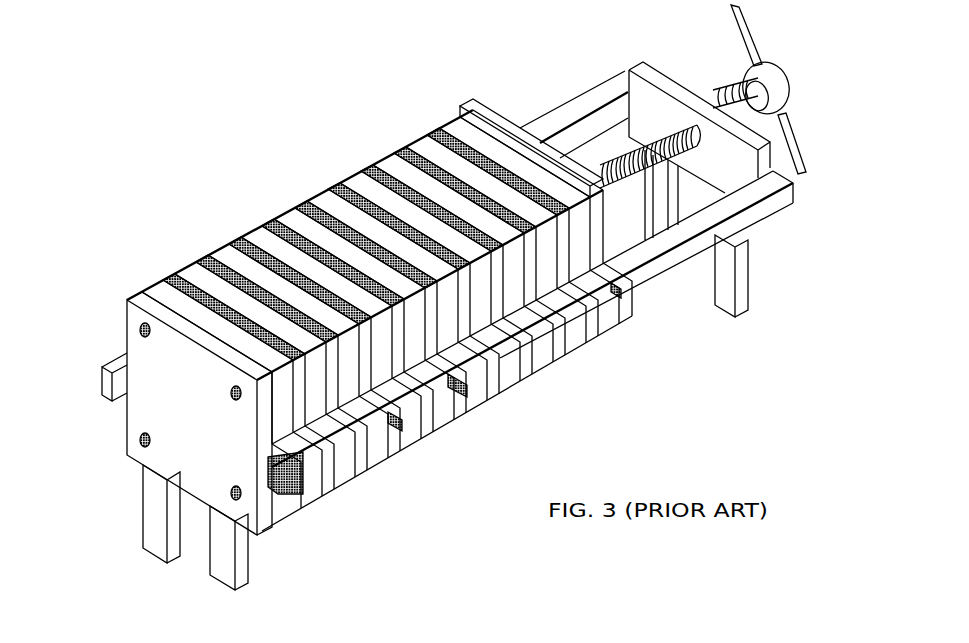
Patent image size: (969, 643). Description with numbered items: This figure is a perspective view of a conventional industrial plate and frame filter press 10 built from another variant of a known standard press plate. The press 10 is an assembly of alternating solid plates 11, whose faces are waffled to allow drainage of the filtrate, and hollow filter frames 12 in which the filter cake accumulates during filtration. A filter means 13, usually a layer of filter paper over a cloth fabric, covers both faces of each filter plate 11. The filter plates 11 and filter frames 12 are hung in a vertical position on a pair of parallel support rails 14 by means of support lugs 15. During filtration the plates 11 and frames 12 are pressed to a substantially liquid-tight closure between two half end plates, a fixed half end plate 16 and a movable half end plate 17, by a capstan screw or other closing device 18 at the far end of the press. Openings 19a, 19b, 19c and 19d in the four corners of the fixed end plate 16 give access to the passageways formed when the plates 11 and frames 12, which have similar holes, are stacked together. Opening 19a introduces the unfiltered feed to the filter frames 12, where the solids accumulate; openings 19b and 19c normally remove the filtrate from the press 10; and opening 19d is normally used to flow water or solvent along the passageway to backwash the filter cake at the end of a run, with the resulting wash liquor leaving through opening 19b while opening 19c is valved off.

The plate and frame filter press 10 is at (386, 132).
The solid plates 11 is at (165, 277).
The hollow filter frames 12 is at (255, 235).
The filter means 13 is at (320, 200).
The support rails 14 is at (100, 378).
The support lugs 15 is at (310, 501).
The fixed half end plate 16 is at (172, 452).
The movable half end plate 17 is at (496, 110).
The capstan screw 18 is at (783, 62).
The opening 19a is at (240, 500).
The opening 19b is at (140, 330).
The opening 19c is at (236, 402).
The opening 19d is at (140, 438).